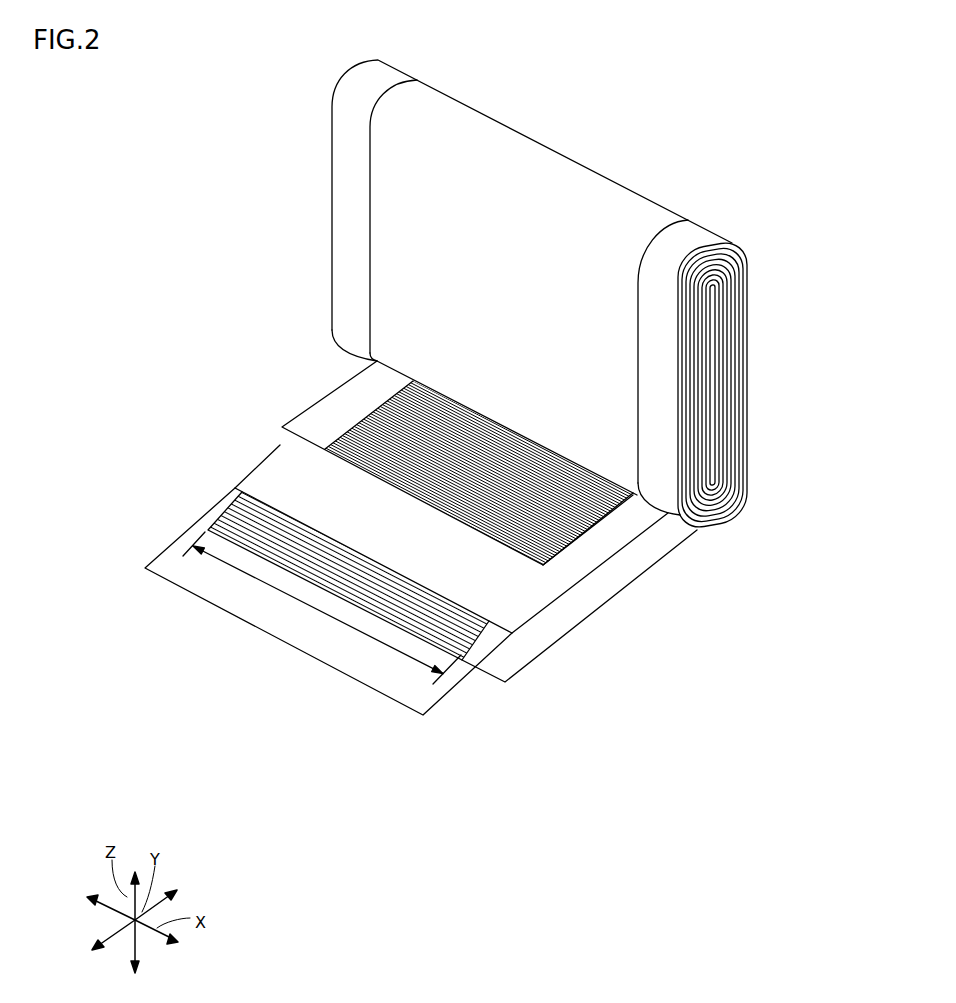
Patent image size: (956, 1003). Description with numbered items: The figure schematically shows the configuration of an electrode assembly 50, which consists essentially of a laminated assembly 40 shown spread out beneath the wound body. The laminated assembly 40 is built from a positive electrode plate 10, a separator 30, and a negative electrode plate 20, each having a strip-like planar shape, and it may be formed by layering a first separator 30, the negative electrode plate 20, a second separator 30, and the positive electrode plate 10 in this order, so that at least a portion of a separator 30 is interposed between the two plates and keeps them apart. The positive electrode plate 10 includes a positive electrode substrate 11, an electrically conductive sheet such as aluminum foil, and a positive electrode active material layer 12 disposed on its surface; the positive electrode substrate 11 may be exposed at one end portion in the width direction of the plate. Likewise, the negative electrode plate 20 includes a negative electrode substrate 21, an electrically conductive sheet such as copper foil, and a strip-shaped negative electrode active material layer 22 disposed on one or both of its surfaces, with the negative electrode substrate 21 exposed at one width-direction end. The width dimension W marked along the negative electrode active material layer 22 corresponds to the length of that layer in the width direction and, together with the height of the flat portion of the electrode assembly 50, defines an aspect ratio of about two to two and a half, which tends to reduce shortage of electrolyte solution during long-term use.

The positive electrode plate 10 is at (430, 568).
The positive electrode substrate 11 is at (327, 433).
The positive electrode active material layer 12 is at (423, 470).
The negative electrode plate 20 is at (452, 633).
The negative electrode substrate 21 is at (567, 617).
The negative electrode active material layer 22 is at (452, 627).
The separator 30 is at (213, 582).
The laminated assembly 40 is at (398, 589).
The electrode assembly 50 is at (721, 187).
The width dimension W is at (240, 563).